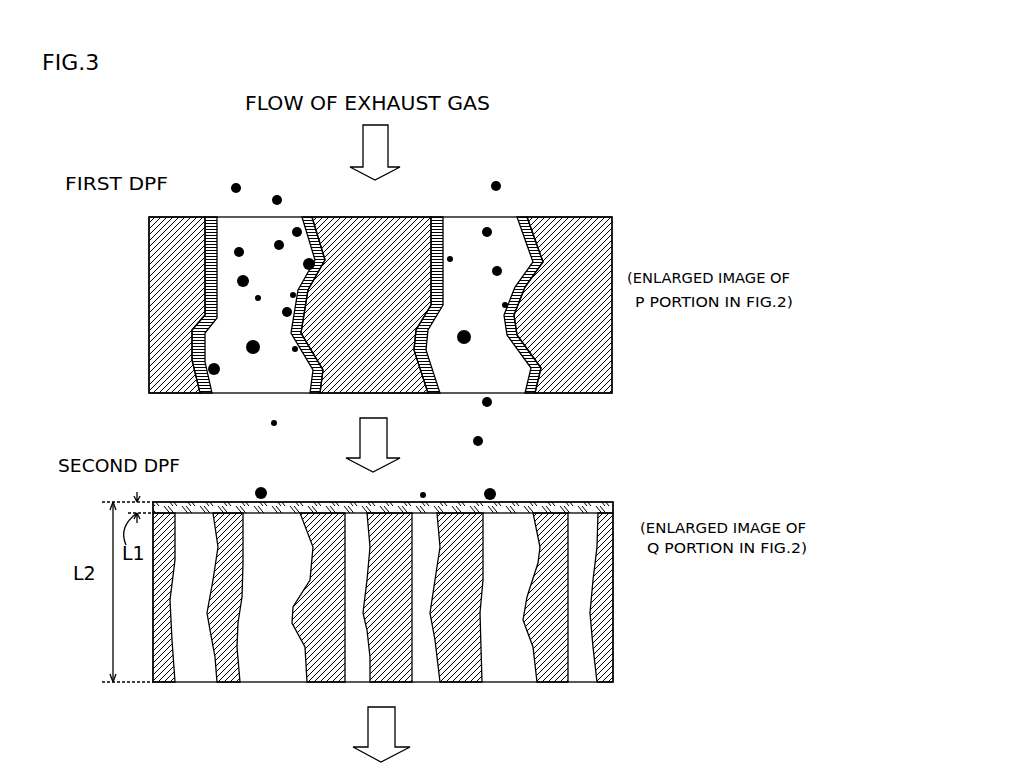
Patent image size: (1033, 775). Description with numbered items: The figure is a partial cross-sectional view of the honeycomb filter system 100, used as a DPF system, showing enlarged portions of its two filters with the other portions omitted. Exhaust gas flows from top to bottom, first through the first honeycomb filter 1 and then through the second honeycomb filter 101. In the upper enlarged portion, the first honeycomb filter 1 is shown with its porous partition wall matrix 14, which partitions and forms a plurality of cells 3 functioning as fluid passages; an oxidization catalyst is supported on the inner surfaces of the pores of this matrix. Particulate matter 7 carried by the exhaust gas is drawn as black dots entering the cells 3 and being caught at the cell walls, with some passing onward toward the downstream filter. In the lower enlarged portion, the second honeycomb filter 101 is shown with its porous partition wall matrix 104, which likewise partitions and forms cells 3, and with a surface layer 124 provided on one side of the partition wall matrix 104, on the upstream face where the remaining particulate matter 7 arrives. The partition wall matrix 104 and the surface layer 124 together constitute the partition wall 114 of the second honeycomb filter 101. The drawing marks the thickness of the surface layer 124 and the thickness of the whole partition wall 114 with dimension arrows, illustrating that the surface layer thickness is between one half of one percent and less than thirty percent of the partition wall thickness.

The honeycomb filter system 100 is at (642, 129).
The first honeycomb filter 1 is at (628, 216).
The partition wall matrix 14 is at (605, 372).
The particulate matter (PM) 7 is at (276, 198).
The cell 3 is at (438, 200).
The second honeycomb filter 101 is at (631, 490).
The partition wall 114 is at (683, 593).
The surface layer 124 is at (612, 507).
The partition wall matrix 104 is at (604, 612).